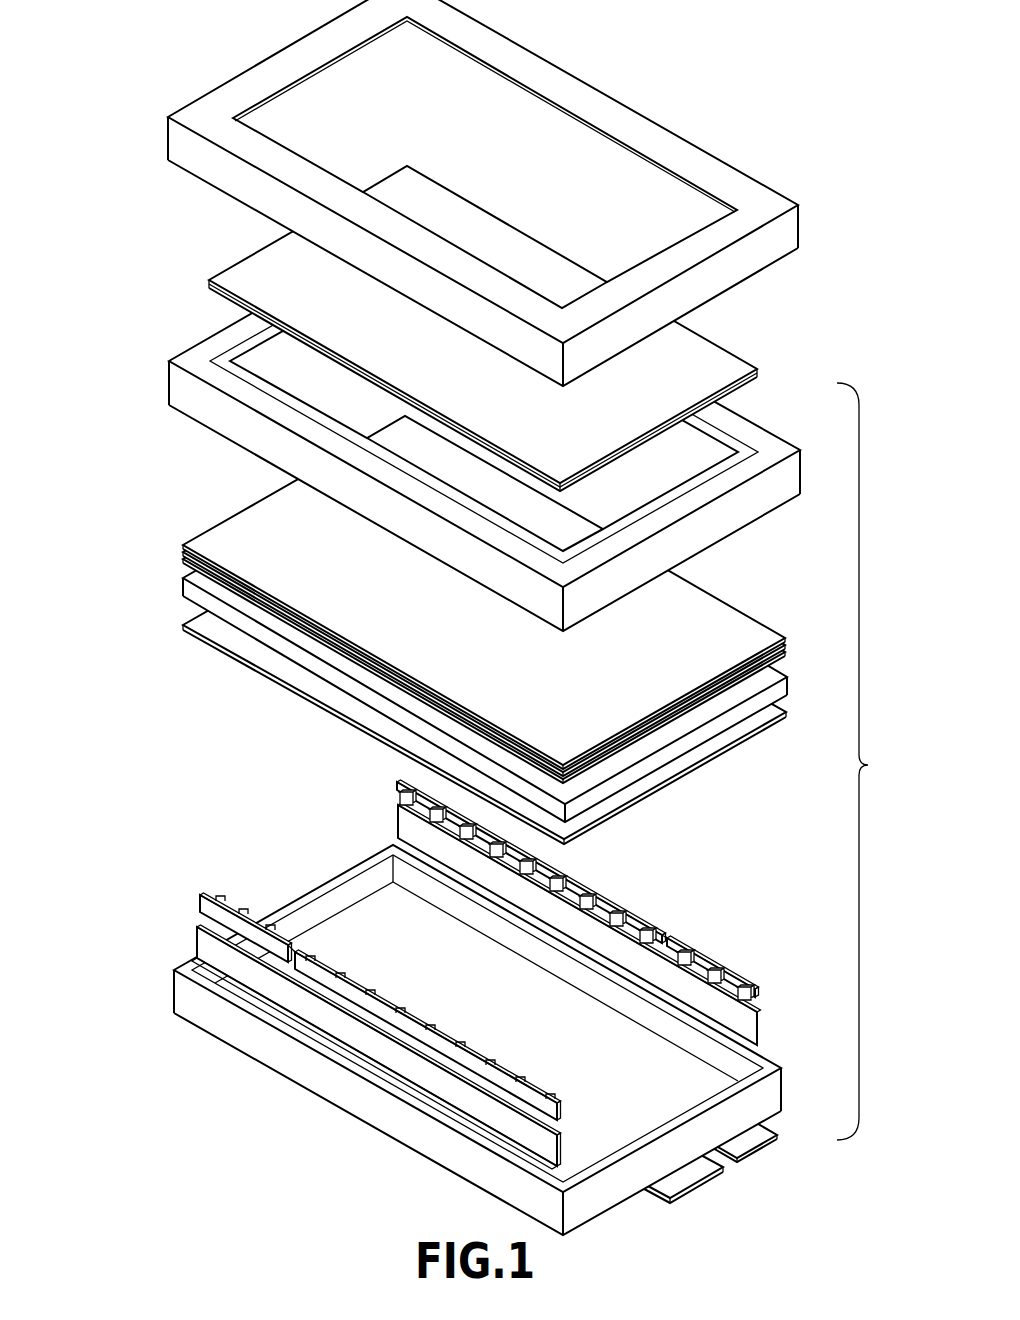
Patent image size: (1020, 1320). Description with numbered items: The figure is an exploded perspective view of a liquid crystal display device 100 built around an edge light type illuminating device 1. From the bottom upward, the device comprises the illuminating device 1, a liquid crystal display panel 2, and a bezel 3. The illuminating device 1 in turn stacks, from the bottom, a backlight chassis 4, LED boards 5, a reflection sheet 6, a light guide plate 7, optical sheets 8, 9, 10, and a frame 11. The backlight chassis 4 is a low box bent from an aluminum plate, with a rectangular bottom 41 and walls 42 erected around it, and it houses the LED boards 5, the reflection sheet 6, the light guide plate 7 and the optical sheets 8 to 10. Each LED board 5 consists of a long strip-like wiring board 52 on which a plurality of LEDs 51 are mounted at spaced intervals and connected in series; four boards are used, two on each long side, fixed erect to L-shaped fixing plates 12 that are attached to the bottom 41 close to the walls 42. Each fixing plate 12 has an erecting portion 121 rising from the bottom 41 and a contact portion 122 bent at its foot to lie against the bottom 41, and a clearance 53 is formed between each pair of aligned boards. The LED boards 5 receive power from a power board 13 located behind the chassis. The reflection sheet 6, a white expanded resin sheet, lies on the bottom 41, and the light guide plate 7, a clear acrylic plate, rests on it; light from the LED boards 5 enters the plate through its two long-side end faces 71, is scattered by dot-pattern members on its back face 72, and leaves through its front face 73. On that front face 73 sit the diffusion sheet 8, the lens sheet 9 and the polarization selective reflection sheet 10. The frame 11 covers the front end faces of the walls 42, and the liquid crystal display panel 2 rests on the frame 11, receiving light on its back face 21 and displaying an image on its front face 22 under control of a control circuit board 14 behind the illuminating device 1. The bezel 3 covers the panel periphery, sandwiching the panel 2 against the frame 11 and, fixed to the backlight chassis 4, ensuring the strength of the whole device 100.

The liquid crystal display device 100 is at (777, 112).
The illuminating device 1 is at (862, 761).
The liquid crystal display panel 2 is at (489, 328).
The bezel 3 is at (657, 130).
The backlight chassis 4 is at (511, 1014).
The LED board 5 is at (467, 921).
The reflection sheet 6 is at (200, 623).
The light guide plate 7 is at (447, 636).
The optical sheet 8 is at (185, 560).
The optical sheet 9 is at (184, 554).
The optical sheet 10 is at (193, 543).
The frame 11 is at (178, 388).
The fixing plate 12 is at (458, 1005).
The power board 13 is at (765, 1148).
The control circuit board 14 is at (700, 1190).
The back face 21 is at (758, 383).
The front face 22 is at (728, 372).
The bottom 41 is at (697, 1083).
The wall 42 is at (310, 1068).
The LED 51 is at (245, 915).
The wiring board 52 is at (200, 903).
The clearance 53 is at (525, 910).
The end face 71 is at (188, 596).
The back face 72 is at (752, 710).
The front face 73 is at (775, 676).
The erecting portion 121 is at (380, 1057).
The contact portion 122 is at (470, 1110).